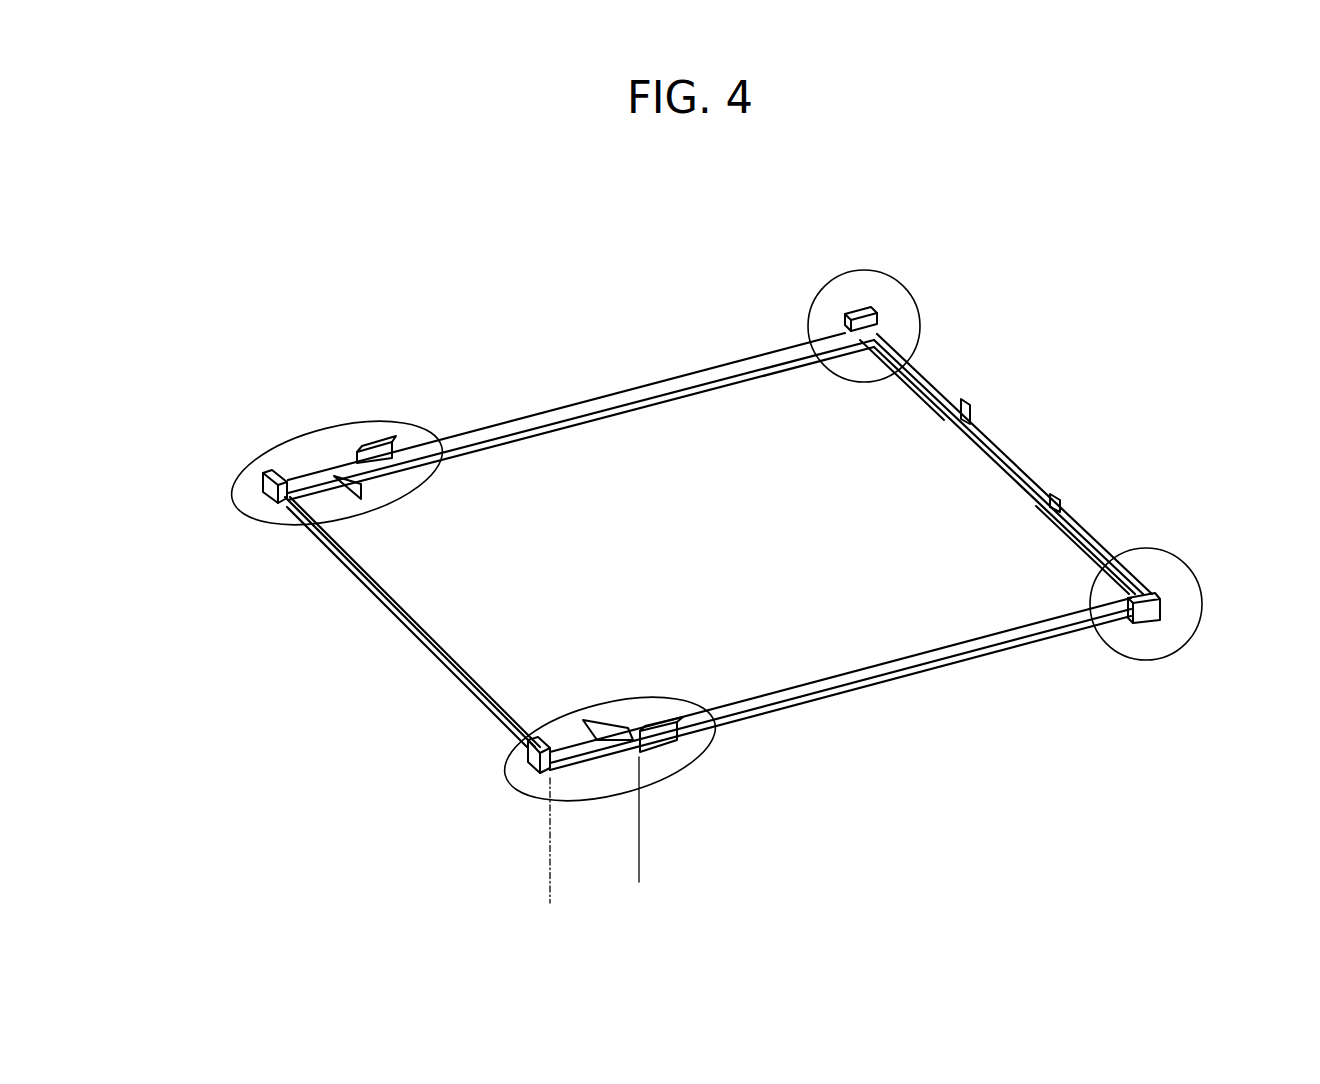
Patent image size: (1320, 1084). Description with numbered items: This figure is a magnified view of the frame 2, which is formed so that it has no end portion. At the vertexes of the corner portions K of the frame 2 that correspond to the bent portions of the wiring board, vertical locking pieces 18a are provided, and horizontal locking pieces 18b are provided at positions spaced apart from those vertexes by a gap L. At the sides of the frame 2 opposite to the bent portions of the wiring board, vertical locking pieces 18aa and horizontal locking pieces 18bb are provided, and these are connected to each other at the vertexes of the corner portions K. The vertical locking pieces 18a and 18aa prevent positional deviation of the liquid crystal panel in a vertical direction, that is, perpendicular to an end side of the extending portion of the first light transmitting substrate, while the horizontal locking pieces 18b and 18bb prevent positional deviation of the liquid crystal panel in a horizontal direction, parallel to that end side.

The frame 2 is at (610, 400).
The vertical locking piece 18a is at (264, 490).
The horizontal locking piece 18b is at (376, 440).
The vertical locking piece 18aa is at (1054, 497).
The horizontal locking piece 18bb is at (848, 314).
The corner portion K is at (895, 270).
The gap L is at (638, 872).